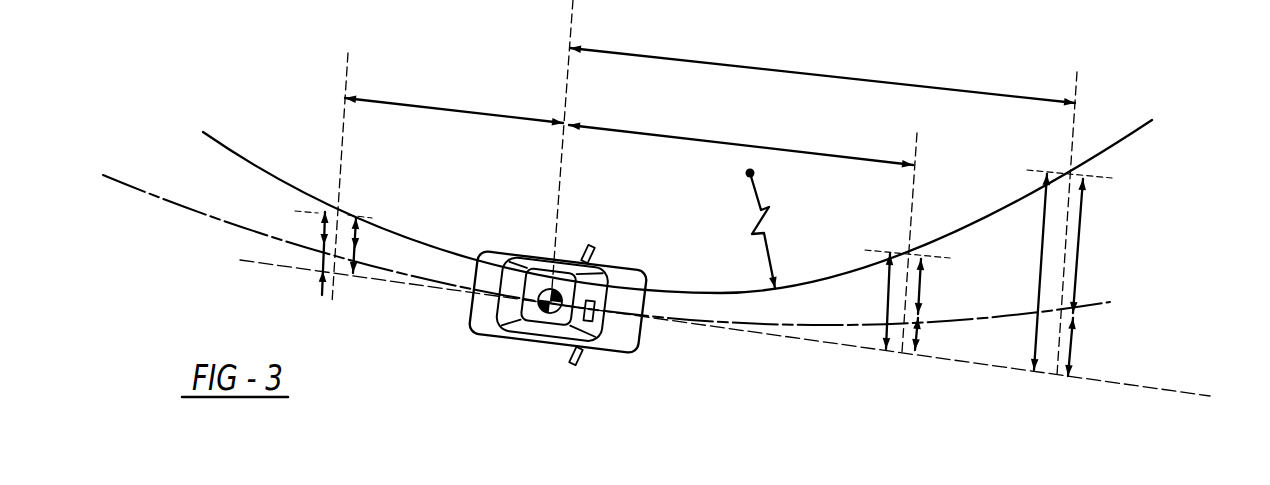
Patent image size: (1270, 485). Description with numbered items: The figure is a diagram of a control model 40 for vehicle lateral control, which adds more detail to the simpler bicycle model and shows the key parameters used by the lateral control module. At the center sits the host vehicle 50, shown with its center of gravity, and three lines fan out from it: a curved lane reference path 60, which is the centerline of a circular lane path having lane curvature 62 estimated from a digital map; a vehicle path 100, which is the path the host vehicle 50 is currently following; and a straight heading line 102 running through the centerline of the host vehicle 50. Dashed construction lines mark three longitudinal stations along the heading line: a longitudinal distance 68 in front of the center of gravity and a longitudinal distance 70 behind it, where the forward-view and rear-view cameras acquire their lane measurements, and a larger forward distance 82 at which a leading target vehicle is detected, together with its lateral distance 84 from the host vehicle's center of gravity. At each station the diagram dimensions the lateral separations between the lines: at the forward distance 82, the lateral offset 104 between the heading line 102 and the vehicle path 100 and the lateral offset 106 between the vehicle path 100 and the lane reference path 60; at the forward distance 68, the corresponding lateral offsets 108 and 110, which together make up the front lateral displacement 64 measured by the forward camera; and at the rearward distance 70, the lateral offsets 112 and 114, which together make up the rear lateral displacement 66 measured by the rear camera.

The control model 40 is at (202, 60).
The host vehicle 50 is at (530, 343).
The lane reference path 60 is at (1130, 137).
The lane curvature 62 is at (770, 255).
The front lateral displacement 64 is at (889, 290).
The rear lateral displacement 66 is at (357, 250).
The longitudinal distance in front of center of gravity 68 is at (687, 137).
The longitudinal distance behind center of gravity 70 is at (483, 112).
The forward distance of leading target vehicle from center of gravity of host vehicl 82 is at (786, 71).
The lateral distance of leading target vehicle from center of gravity of host vehicl 84 is at (1042, 235).
The vehicle path 100 is at (1103, 305).
The heading line 102 is at (1187, 392).
The lateral offset between the heading line and the vehicle path at forward distance 104 is at (1073, 343).
The lateral offset between the vehicle path and the lane reference path at forward d 106 is at (1084, 248).
The lateral offset between the heading line and the vehicle path at forward distance 108 is at (920, 339).
The lateral offset between the vehicle path and the lane reference path at forward d 110 is at (921, 288).
The lateral offset between the heading line and the vehicle path at rearward distanc 112 is at (323, 258).
The lateral offset between the vehicle path and the lane reference path at rearward 114 is at (323, 231).